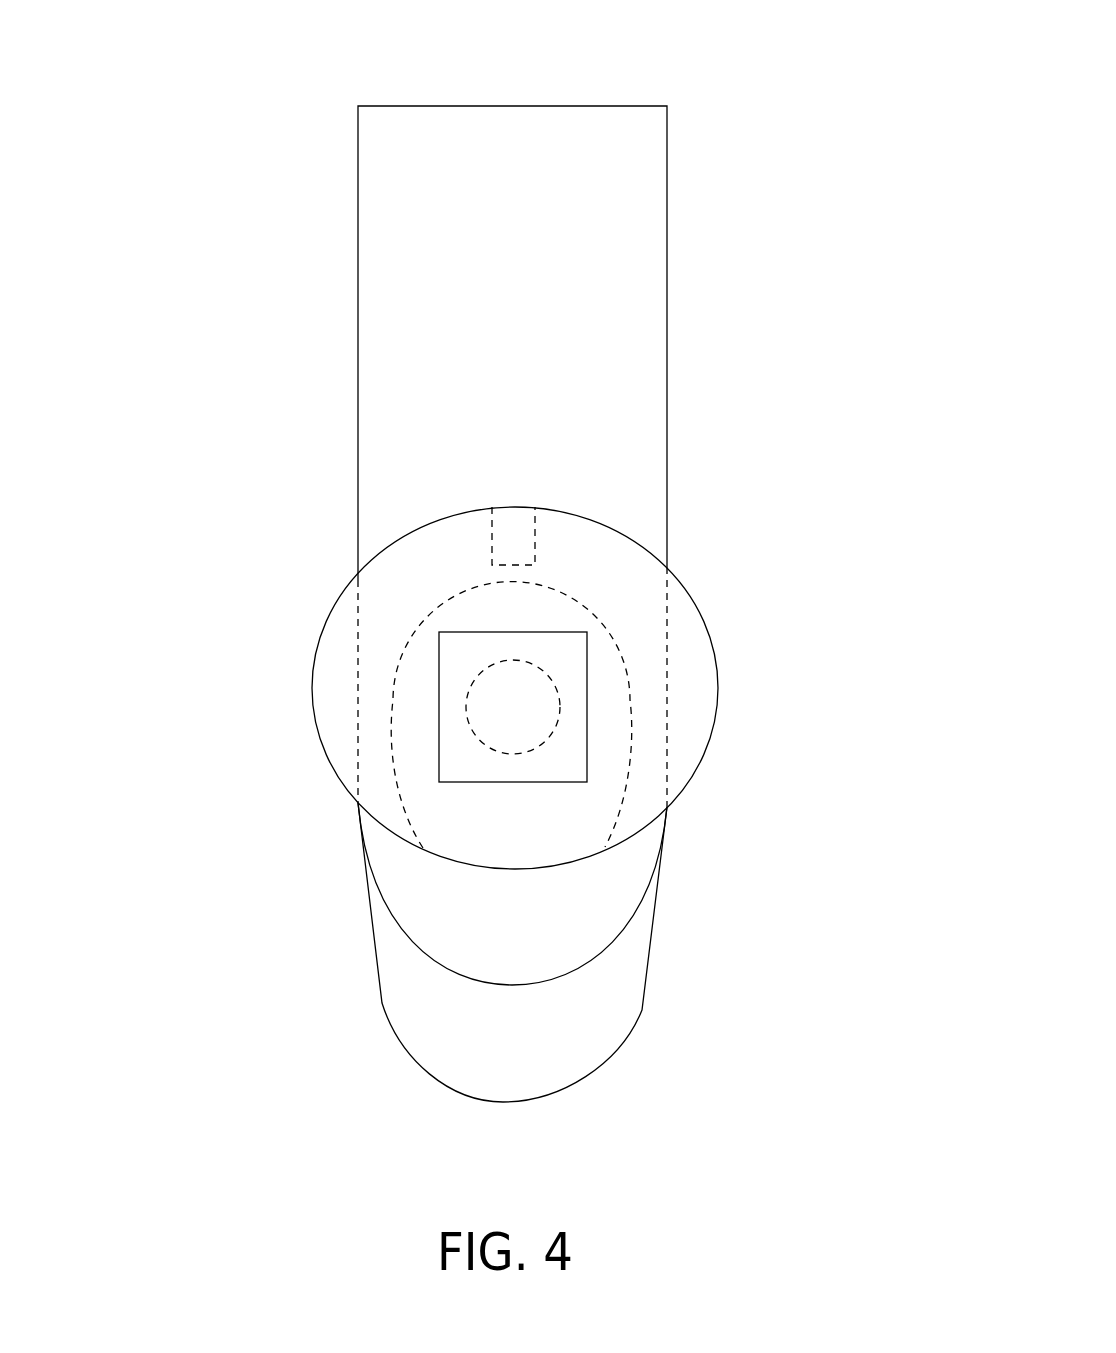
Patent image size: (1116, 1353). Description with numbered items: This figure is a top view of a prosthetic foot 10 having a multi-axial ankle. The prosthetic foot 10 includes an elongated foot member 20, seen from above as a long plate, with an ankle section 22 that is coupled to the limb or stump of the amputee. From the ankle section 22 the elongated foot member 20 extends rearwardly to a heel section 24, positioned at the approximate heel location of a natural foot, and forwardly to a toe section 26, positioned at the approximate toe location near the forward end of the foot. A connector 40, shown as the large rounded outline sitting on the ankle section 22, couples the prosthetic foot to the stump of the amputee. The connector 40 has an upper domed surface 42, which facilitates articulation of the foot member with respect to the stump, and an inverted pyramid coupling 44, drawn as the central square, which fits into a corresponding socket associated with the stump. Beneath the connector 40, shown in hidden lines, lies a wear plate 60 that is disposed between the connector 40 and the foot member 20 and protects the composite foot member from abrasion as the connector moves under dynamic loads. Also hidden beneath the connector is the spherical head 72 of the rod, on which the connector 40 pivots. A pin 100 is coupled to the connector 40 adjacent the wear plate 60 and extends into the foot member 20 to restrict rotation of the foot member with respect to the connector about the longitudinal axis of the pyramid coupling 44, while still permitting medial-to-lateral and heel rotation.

The prosthetic foot 10 is at (205, 168).
The elongated foot member 20 is at (215, 350).
The ankle section 22 is at (607, 895).
The heel section 24 is at (595, 145).
The toe section 26 is at (607, 1003).
The connector 40 is at (705, 515).
The upper domed surface 42 is at (638, 597).
The inverted pyramid coupling 44 is at (567, 668).
The wear plate 60 is at (407, 660).
The spherical head 72 is at (547, 722).
The pin 100 is at (530, 508).